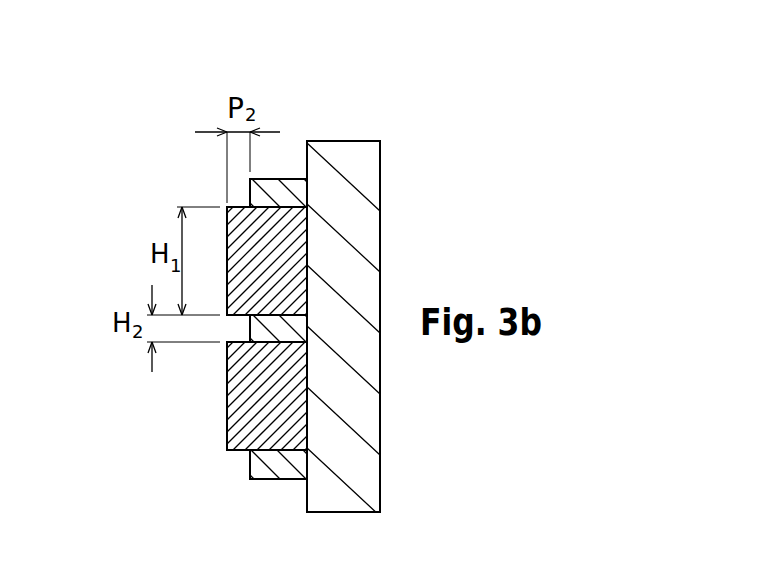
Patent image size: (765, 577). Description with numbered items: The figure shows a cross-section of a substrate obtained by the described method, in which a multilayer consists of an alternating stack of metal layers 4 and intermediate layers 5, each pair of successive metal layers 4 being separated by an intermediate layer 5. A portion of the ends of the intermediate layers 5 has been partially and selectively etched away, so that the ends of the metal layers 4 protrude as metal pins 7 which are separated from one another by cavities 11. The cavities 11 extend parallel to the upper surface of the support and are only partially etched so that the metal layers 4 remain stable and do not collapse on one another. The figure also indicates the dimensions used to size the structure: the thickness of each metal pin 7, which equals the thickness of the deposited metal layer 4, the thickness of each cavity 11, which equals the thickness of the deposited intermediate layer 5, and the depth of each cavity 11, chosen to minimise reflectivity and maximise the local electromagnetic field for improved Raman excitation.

The metal layer 4 is at (242, 430).
The intermediate layer 5 is at (280, 468).
The metal pin 7 is at (238, 398).
The cavity 11 is at (242, 465).